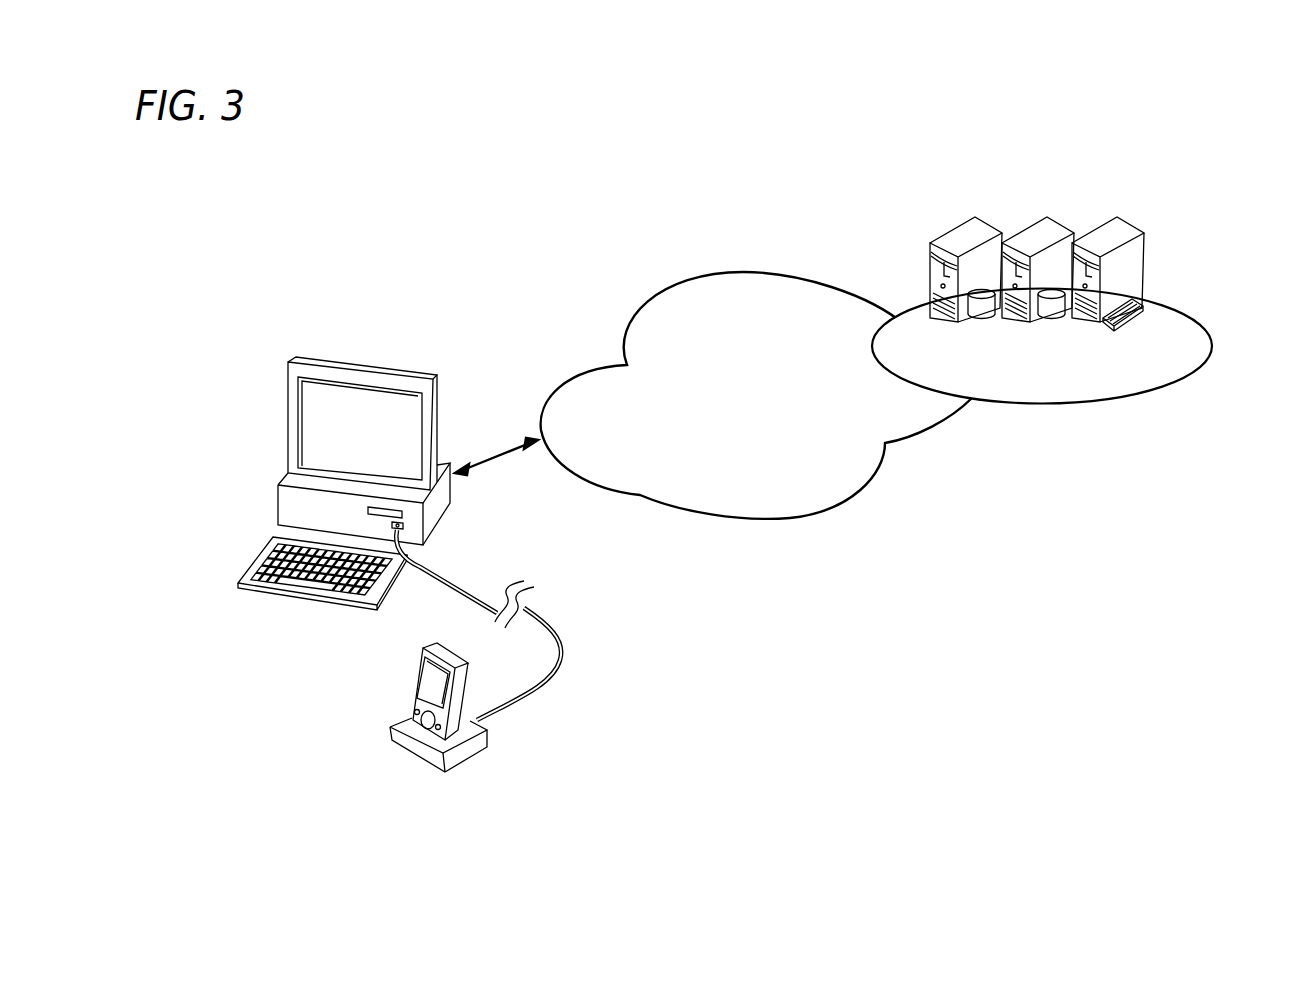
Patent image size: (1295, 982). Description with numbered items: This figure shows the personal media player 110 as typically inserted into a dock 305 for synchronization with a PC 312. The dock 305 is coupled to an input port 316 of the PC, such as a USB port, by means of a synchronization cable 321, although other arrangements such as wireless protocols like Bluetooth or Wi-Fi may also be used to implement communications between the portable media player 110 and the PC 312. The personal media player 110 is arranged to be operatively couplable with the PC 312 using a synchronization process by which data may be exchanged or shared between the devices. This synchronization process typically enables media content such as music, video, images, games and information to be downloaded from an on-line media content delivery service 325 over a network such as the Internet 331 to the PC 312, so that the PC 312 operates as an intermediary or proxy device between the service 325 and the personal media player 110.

The personal media player 110 is at (423, 648).
The dock 305 is at (484, 742).
The PC 312 is at (278, 489).
The input port 316 is at (405, 528).
The synchronization cable 321 is at (562, 653).
The media content delivery service 325 is at (1213, 338).
The Internet 331 is at (743, 272).